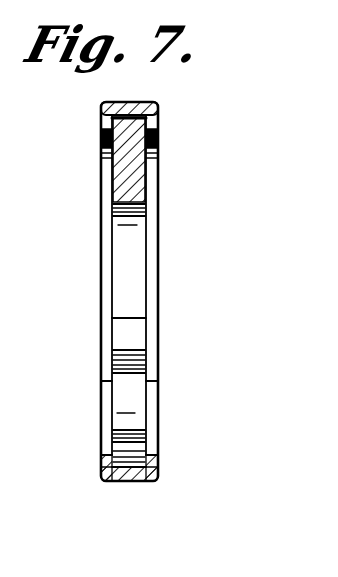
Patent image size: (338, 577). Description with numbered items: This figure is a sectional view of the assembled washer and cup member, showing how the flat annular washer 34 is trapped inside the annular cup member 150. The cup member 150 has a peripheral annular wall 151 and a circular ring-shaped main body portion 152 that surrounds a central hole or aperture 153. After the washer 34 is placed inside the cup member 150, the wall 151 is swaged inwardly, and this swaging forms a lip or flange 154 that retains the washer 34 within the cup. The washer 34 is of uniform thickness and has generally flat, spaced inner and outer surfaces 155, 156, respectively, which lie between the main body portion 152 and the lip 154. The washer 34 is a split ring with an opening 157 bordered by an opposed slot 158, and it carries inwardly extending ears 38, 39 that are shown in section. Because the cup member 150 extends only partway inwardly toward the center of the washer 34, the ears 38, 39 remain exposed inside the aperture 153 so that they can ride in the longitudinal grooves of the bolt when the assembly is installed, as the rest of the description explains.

The cup member 150 is at (142, 481).
The peripheral annular wall 151 is at (112, 482).
The main body portion 152 is at (101, 116).
The aperture 153 is at (101, 144).
The lip 154 is at (181, 100).
The washer 34 is at (146, 152).
The ear 38 is at (111, 208).
The ear 39 is at (128, 324).
The inner surface 155 is at (101, 383).
The outer surface 156 is at (158, 384).
The opening 157 is at (112, 463).
The slot 158 is at (130, 456).